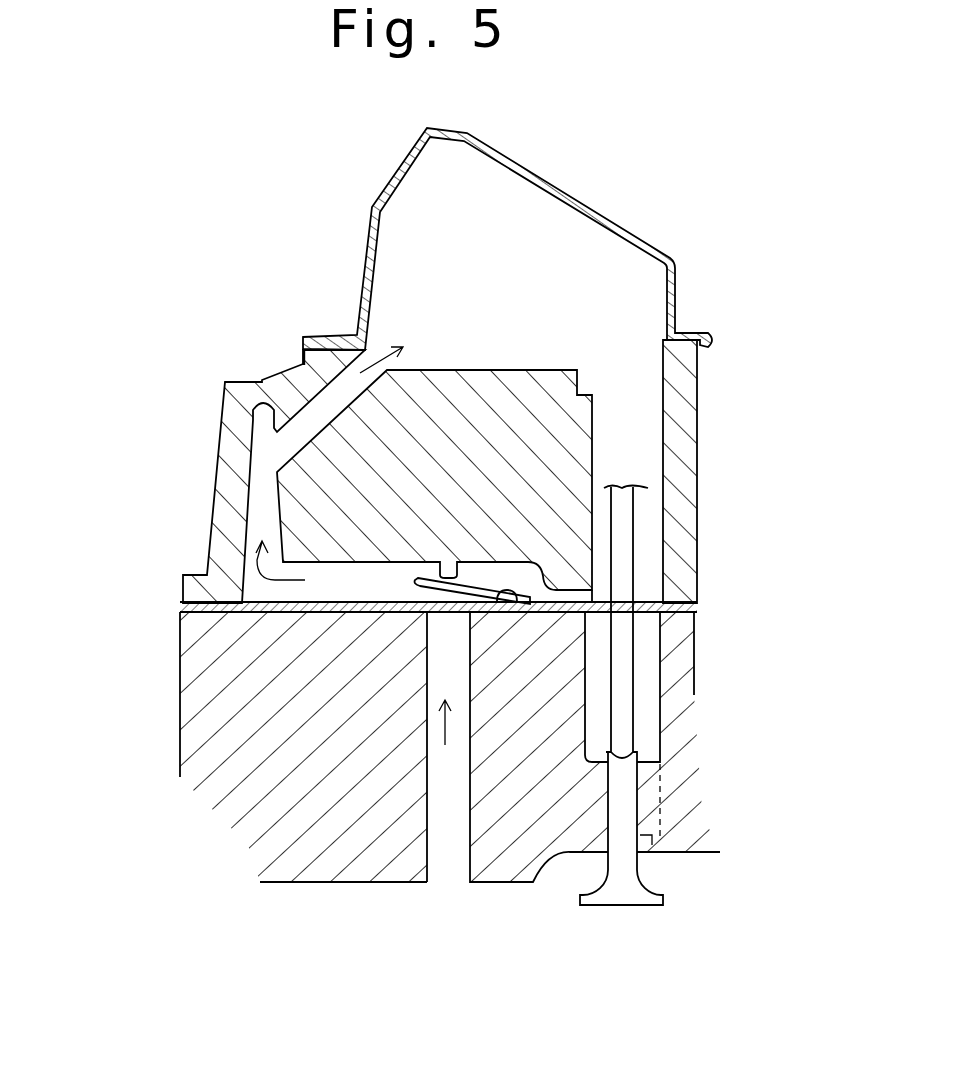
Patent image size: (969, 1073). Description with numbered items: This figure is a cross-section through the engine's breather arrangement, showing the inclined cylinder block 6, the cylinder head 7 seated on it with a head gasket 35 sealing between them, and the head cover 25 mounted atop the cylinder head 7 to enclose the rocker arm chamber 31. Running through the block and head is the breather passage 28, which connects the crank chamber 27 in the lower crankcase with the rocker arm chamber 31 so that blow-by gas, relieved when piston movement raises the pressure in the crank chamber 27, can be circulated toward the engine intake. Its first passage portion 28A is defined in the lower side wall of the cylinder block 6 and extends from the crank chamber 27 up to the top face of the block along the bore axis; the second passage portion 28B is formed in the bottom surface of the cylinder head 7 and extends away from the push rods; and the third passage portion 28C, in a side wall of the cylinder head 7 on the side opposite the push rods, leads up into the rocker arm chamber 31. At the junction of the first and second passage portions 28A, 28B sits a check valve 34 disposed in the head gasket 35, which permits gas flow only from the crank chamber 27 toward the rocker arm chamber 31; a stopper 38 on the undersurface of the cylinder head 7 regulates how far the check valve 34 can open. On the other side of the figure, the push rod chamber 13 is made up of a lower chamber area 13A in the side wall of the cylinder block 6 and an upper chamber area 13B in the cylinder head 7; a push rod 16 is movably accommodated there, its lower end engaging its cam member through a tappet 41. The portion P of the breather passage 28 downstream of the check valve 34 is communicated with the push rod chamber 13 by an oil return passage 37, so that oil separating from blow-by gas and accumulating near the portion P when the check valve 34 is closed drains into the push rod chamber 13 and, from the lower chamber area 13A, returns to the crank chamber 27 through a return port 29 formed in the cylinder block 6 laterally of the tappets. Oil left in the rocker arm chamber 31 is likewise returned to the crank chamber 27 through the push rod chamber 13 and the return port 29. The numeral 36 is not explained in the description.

The cylinder head 7 is at (223, 447).
The head cover 25 is at (603, 215).
The rocker arm chamber 31 is at (508, 195).
The check valve 34 is at (593, 400).
The portion of the breather passage downstream of the check valve P is at (593, 470).
The chamber space 36 is at (597, 540).
The upper chamber area 13B is at (648, 578).
The lower chamber area 13A is at (643, 670).
The push rod chamber 13 is at (828, 560).
The head gasket 35 is at (180, 602).
The cylinder block 6 is at (178, 655).
The first passage portion 28A is at (447, 863).
The breather passage 28 is at (380, 585).
The third passage portion 28C is at (267, 512).
The second passage portion 28B is at (337, 583).
The stopper 38 is at (452, 578).
The oil return passage 37 is at (548, 578).
The push rod 16 is at (627, 555).
The tappet 41 is at (623, 873).
The return port 29 is at (655, 841).
The crank chamber 27 is at (302, 966).